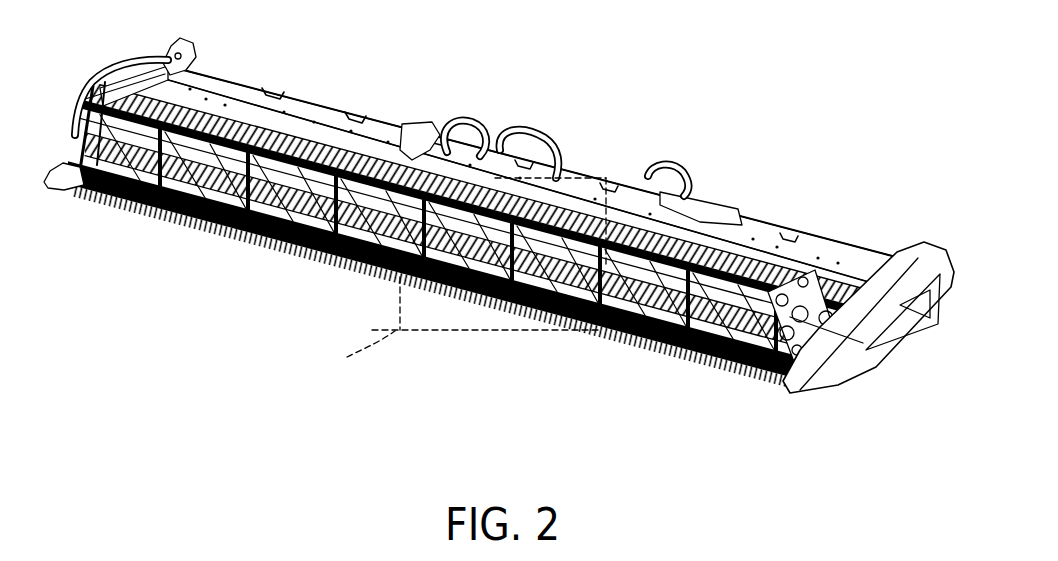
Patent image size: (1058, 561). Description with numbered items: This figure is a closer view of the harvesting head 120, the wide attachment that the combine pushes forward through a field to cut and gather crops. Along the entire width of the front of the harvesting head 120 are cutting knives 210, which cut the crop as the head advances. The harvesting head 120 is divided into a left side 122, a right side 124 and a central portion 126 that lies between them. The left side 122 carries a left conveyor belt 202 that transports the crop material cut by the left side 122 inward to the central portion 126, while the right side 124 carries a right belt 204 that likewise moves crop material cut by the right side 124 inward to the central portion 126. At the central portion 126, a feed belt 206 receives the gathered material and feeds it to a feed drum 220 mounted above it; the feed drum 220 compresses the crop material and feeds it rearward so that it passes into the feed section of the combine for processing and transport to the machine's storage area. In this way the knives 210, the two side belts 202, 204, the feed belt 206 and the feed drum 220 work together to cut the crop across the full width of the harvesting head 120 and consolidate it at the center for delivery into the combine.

The harvesting head 120 is at (499, 280).
The left side 122 is at (190, 242).
The right side 124 is at (605, 356).
The central portion 126 is at (440, 318).
The left conveyor belt 202 is at (276, 238).
The right belt 204 is at (560, 310).
The feed belt 206 is at (403, 277).
The cutting knives 210 is at (143, 203).
The feed drum 220 is at (566, 207).